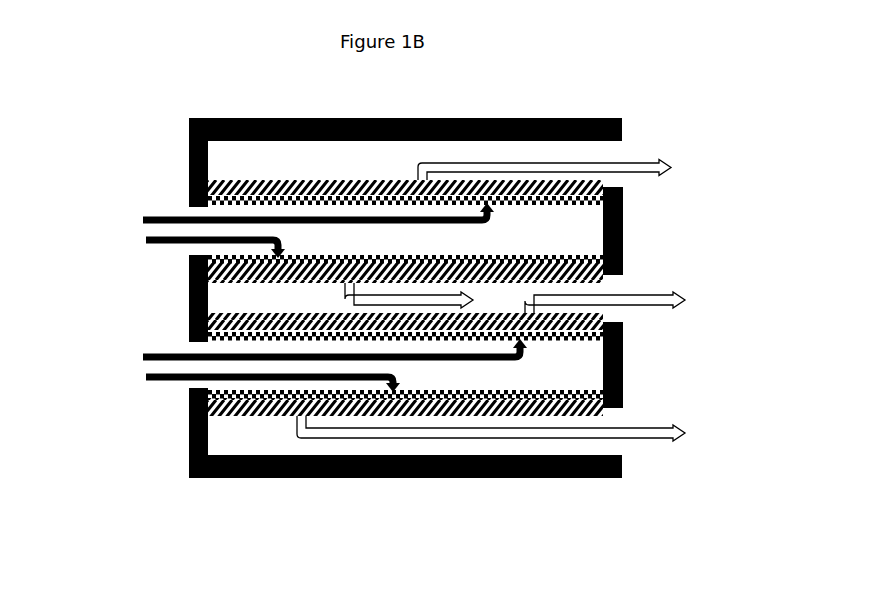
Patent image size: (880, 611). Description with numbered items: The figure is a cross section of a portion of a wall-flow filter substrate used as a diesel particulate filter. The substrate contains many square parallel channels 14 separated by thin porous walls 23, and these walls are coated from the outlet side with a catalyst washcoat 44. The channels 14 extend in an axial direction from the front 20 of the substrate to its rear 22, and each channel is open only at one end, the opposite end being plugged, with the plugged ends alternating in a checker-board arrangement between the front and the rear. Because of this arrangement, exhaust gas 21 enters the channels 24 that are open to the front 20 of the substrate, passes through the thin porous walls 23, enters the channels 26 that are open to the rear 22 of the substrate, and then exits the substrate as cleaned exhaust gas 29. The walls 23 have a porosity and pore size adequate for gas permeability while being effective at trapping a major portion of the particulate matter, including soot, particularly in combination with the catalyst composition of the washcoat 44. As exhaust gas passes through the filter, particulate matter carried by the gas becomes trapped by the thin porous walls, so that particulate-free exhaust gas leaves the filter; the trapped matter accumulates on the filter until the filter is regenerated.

The channels 14 is at (387, 236).
The front 20 is at (189, 442).
The exhaust gas 21 is at (177, 376).
The rear 22 is at (623, 223).
The thin porous walls 23 is at (550, 340).
The channels open to the front 24 is at (570, 237).
The channels open to the rear 26 is at (272, 433).
The cleaned exhaust gas 29 is at (642, 442).
The catalyst washcoat 44 is at (386, 402).